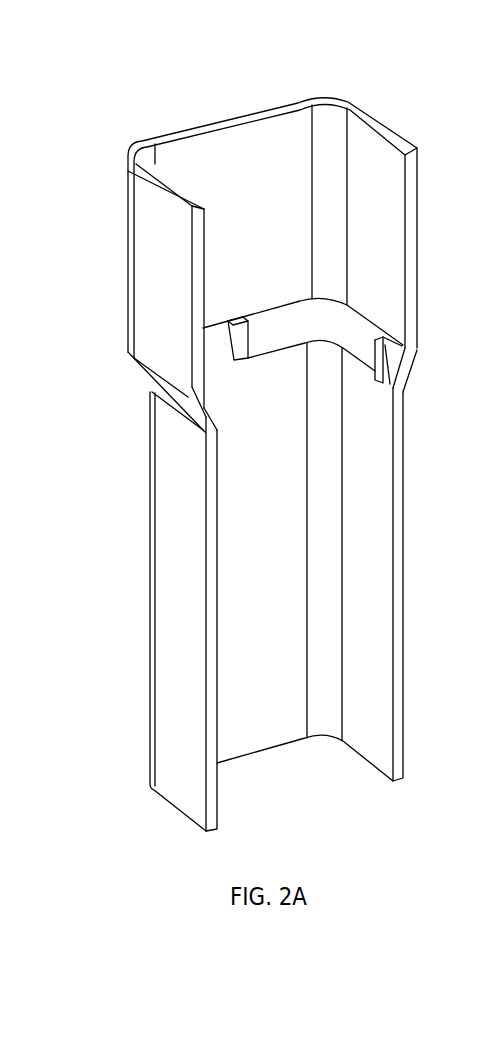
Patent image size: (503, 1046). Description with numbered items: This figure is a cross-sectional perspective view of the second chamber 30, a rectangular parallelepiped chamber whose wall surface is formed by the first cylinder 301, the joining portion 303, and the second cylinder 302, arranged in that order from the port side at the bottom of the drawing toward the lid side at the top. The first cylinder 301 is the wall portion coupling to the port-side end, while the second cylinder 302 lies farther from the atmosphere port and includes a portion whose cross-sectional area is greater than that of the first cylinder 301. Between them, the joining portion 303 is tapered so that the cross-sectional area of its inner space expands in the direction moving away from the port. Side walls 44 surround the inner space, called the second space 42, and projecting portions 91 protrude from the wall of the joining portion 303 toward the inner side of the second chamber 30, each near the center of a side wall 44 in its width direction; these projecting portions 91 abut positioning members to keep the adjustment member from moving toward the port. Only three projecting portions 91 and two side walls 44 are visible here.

The second chamber 30 is at (233, 587).
The second space 42 is at (152, 611).
The side walls 44 is at (275, 203).
The projecting portions 91 is at (228, 321).
The first cylinder 301 is at (168, 630).
The second cylinder 302 is at (147, 297).
The joining portion 303 is at (157, 385).